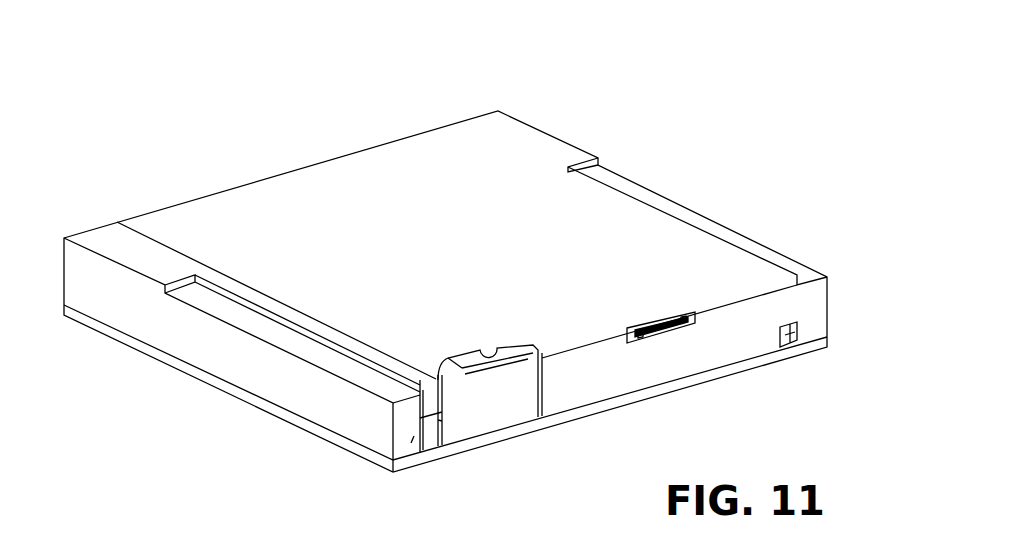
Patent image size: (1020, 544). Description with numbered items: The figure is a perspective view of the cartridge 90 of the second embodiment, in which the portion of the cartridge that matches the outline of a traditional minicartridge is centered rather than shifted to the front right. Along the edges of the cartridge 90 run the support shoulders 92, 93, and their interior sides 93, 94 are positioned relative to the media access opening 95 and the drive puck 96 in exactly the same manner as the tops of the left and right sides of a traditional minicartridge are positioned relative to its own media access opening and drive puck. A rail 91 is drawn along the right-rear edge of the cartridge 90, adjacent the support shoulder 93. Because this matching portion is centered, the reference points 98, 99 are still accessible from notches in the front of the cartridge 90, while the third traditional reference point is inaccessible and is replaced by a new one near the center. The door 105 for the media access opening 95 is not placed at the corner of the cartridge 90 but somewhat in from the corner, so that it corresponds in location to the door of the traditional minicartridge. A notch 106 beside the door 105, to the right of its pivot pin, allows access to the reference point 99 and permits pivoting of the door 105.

The cartridge 90 is at (334, 131).
The guide rail 91 is at (720, 230).
The support shoulder 93 is at (747, 247).
The interior side 94 is at (287, 322).
The support shoulder 92 is at (324, 355).
The media access opening 95 is at (478, 353).
The drive puck 96 is at (658, 322).
The reference point 98 is at (797, 332).
The reference point 99 is at (452, 453).
The door 105 is at (513, 413).
The notch 106 is at (438, 420).